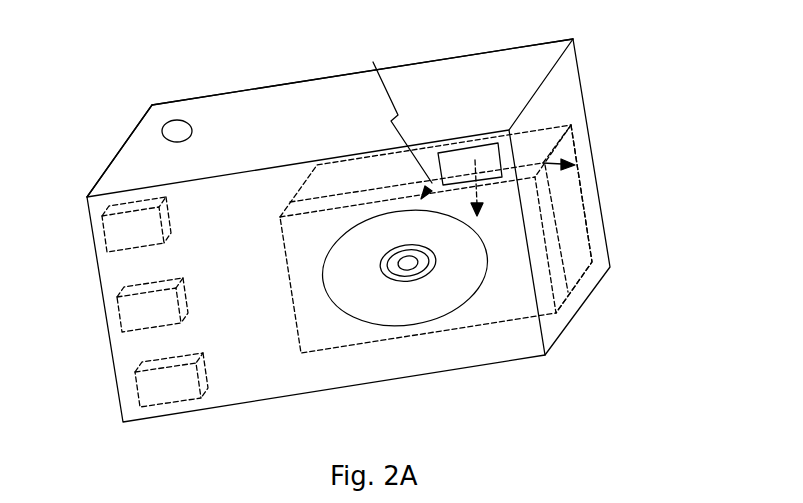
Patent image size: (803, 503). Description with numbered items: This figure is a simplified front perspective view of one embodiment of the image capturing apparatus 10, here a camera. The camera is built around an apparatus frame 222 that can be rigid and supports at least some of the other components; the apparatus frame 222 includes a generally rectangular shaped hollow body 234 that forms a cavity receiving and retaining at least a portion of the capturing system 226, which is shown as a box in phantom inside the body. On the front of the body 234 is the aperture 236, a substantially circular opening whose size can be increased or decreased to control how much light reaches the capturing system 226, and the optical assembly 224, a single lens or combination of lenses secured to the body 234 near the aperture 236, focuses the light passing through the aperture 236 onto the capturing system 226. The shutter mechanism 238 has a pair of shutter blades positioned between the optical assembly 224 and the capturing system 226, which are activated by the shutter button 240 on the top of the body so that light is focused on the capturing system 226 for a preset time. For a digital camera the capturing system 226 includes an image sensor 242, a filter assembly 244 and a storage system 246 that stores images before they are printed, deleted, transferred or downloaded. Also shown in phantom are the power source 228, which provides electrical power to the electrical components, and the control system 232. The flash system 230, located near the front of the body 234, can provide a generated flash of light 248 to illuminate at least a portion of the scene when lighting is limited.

The image capturing apparatus 10 is at (153, 97).
The apparatus frame 222 is at (283, 102).
The optical assembly 224 is at (395, 274).
The capturing system 226 is at (683, 220).
The power source 228 is at (152, 385).
The flash system 230 is at (462, 163).
The control system 232 is at (133, 312).
The body 234 is at (113, 165).
The aperture 236 is at (409, 269).
The shutter mechanism 238 is at (425, 270).
The shutter button 240 is at (178, 122).
The image sensor 242 is at (577, 244).
The filter assembly 244 is at (557, 288).
The storage system 246 is at (115, 230).
The flash of light 248 is at (390, 117).